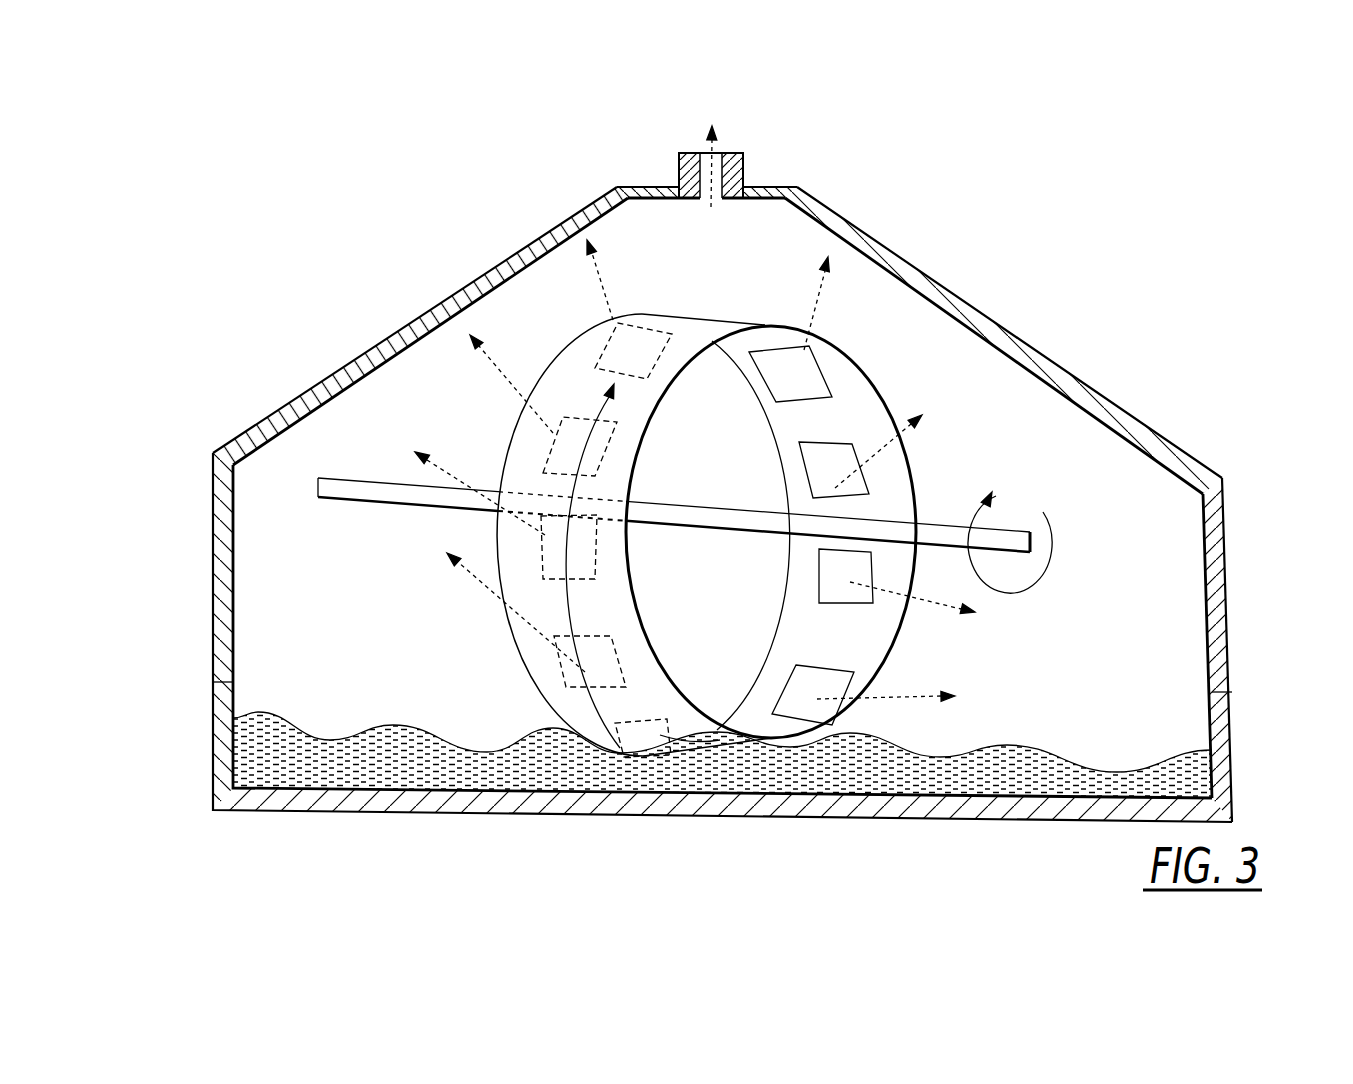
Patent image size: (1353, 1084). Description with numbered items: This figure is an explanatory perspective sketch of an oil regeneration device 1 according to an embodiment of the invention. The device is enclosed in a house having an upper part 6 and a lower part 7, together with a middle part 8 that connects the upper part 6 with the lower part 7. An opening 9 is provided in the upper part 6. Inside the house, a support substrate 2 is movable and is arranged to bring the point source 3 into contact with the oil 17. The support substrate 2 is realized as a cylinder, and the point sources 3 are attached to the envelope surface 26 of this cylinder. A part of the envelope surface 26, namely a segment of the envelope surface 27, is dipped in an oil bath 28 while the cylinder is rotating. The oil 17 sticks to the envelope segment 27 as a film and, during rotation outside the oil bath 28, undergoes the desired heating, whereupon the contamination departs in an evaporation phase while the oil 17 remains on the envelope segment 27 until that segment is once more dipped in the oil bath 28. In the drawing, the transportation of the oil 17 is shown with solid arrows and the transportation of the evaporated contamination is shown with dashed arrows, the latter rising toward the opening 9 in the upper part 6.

The oil regeneration device 1 is at (709, 460).
The support substrate 2 is at (585, 427).
The point source 3 is at (638, 315).
The upper part 6 is at (774, 174).
The lower part 7 is at (1246, 654).
The middle part 8 is at (989, 298).
The opening 9 is at (717, 158).
The oil 17 is at (263, 712).
The envelope surface 26 is at (850, 355).
The segment of the envelope surface 27 is at (695, 727).
The oil bath 28 is at (213, 746).